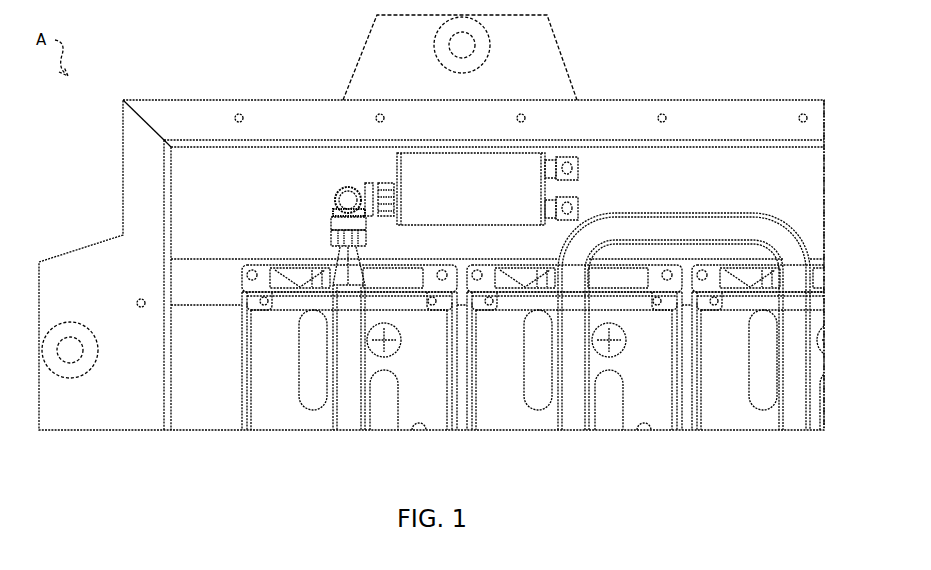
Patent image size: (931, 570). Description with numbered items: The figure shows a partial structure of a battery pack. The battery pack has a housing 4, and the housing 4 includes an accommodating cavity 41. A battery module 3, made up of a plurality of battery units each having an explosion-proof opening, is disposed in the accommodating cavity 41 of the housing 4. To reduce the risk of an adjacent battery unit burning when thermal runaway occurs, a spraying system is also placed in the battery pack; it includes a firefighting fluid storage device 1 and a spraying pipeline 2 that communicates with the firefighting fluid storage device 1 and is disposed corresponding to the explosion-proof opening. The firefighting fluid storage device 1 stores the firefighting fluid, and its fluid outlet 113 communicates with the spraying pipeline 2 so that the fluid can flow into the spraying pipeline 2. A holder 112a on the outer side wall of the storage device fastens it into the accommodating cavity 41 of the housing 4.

The firefighting fluid storage device 1 is at (397, 163).
The spraying pipeline 2 is at (800, 418).
The battery module 3 is at (437, 432).
The housing 4 is at (182, 103).
The accommodating cavity 41 is at (750, 163).
The holder 112a is at (580, 176).
The fluid outlet 113 is at (372, 220).